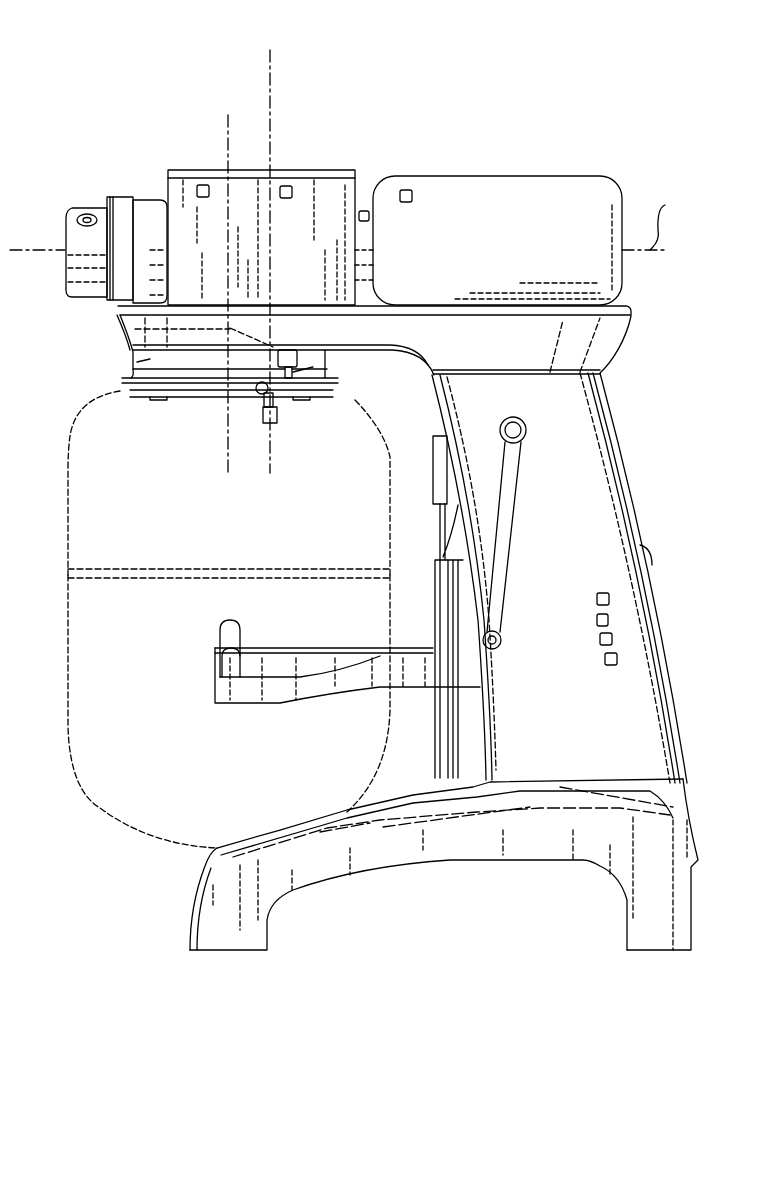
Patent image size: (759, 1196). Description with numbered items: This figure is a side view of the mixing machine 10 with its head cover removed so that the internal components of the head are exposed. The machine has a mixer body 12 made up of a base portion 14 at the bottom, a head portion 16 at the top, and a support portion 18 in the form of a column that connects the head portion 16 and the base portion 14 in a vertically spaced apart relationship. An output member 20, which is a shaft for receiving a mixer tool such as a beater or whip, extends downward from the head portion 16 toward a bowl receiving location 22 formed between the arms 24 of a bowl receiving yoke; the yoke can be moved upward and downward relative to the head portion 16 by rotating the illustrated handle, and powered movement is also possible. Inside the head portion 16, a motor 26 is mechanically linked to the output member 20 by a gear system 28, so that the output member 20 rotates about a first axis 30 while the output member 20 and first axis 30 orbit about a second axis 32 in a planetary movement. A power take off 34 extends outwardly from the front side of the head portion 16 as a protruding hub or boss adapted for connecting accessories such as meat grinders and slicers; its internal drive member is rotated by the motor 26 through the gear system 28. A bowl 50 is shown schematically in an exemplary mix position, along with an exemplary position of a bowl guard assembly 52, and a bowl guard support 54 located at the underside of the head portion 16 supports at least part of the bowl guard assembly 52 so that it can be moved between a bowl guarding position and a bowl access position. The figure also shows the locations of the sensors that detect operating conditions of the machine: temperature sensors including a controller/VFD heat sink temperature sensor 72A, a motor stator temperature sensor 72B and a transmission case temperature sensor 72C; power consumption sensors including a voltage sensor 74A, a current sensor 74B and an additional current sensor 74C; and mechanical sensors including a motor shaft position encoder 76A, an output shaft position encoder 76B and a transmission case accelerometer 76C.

The mixing machine 10 is at (605, 65).
The mixer body 12 is at (632, 423).
The base portion 14 is at (188, 883).
The head portion 16 is at (148, 135).
The support portion 18 is at (645, 522).
The output member 20 is at (277, 410).
The bowl receiving location 22 is at (153, 738).
The arms 24 is at (308, 650).
The motor 26 is at (503, 215).
The gear system 28 is at (300, 210).
The first axis 30 is at (266, 70).
The second axis 32 is at (227, 135).
The power take off 34 is at (88, 203).
The bowl 50 is at (110, 677).
The bowl guard assembly 52 is at (77, 533).
The bowl guard support 54 is at (114, 379).
The controller/VFD heat sink temperature sensor 72A is at (610, 597).
The motor stator temperature sensor 72B is at (411, 191).
The transmission case temperature sensor 72C is at (197, 190).
The voltage sensor 74A is at (610, 618).
The current sensor 74B is at (613, 637).
The additional current sensor 74C is at (618, 657).
The motor shaft position encoder 76A is at (365, 210).
The output shaft position encoder 76B is at (257, 390).
The transmission case accelerometer 76C is at (283, 187).